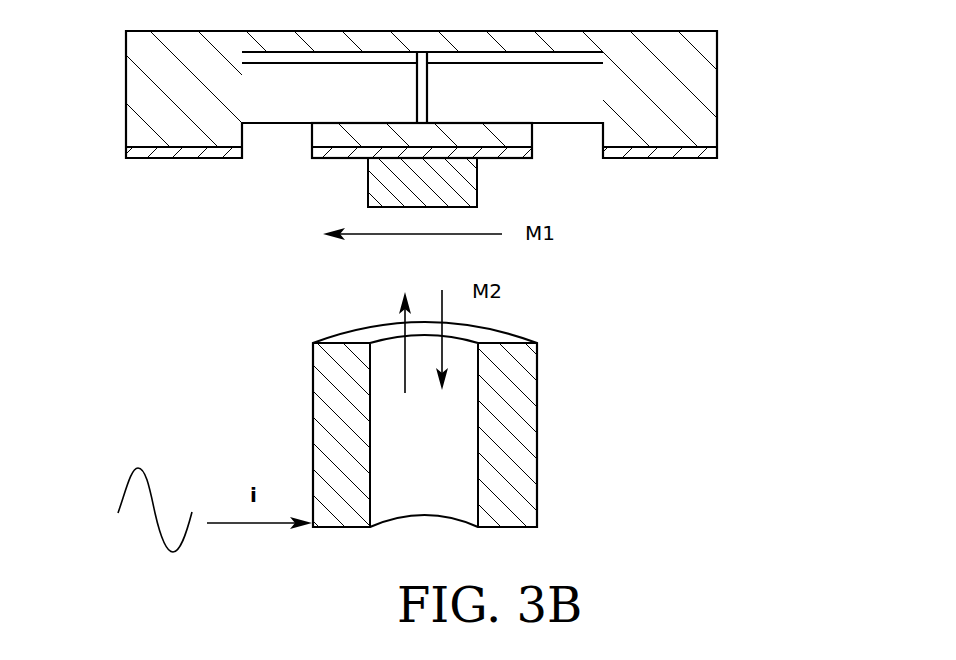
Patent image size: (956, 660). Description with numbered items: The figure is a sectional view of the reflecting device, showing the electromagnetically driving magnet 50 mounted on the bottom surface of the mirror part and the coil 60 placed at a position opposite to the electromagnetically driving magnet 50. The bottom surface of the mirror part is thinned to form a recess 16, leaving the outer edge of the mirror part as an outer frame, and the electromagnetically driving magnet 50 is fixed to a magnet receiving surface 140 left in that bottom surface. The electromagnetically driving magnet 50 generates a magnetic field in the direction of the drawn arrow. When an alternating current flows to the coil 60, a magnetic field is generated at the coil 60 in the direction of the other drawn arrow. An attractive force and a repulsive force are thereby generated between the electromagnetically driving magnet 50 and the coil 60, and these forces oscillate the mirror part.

The recess 16 is at (305, 93).
The magnet receiving surface 140 is at (400, 160).
The electromagnetically driving magnet 50 is at (453, 172).
The coil 60 is at (537, 442).